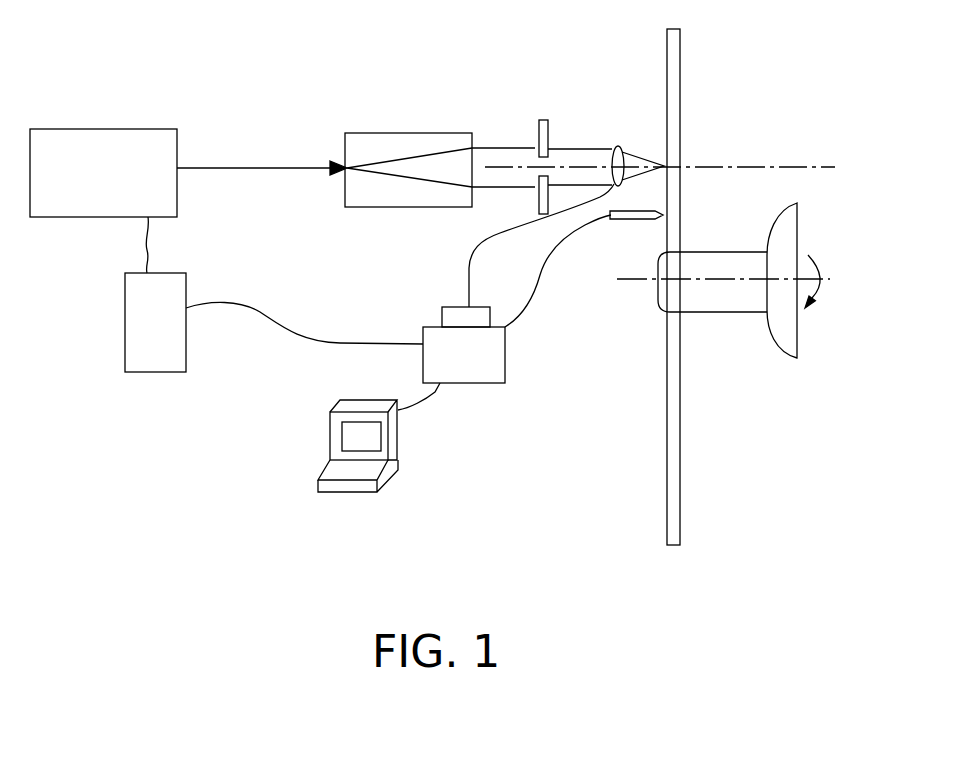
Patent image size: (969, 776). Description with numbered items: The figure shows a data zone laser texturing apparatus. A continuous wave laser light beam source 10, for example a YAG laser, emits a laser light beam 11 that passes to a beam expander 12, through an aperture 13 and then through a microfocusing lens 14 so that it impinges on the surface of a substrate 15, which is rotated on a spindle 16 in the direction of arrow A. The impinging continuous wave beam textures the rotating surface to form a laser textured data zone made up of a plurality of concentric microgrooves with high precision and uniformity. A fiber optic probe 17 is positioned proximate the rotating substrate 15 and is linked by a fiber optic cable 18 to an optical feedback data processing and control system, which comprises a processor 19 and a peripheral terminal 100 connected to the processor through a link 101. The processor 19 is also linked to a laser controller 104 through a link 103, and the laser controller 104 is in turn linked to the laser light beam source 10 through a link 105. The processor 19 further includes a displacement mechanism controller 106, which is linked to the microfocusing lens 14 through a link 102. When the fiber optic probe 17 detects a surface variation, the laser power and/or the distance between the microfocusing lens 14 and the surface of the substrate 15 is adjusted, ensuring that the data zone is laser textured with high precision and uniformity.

The continuous wave laser light beam source 10 is at (90, 217).
The laser light beam 11 is at (268, 170).
The beam expander 12 is at (388, 133).
The aperture 13 is at (544, 120).
The microfocusing lens 14 is at (616, 146).
The substrate 15 is at (667, 50).
The spindle 16 is at (797, 333).
The fiber optic probe 17 is at (633, 220).
The fiber optic cable 18 is at (546, 261).
The processor 19 is at (483, 383).
The peripheral terminal 100 is at (330, 436).
The link between processor and peripheral terminal 101 is at (424, 413).
The link between displacement mechanism control and microfocusing lens 102 is at (470, 264).
The link between processor and laser controller 103 is at (266, 322).
The laser controller 104 is at (143, 373).
The link between laser controller and laser light beam source 105 is at (150, 240).
The displacement mechanism controller 106 is at (444, 310).